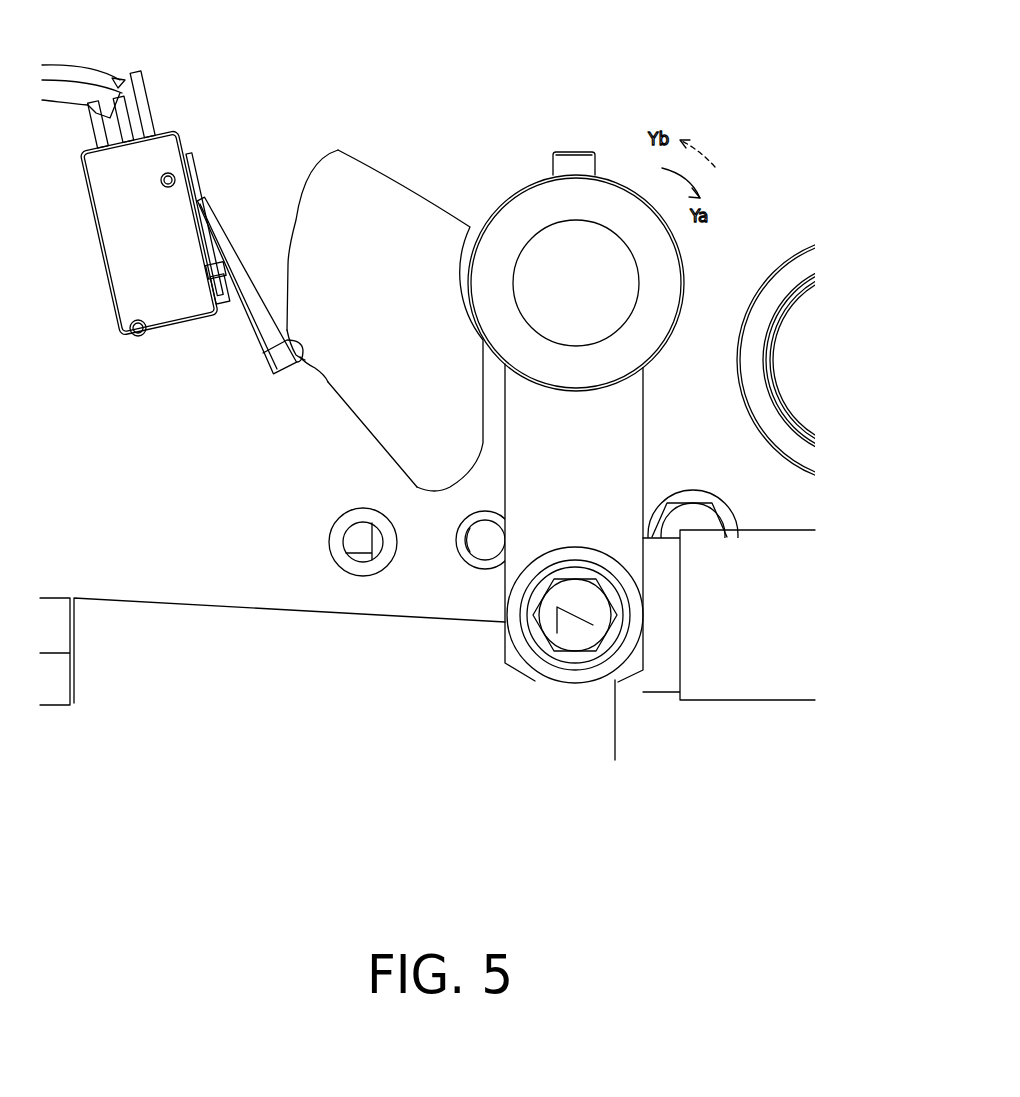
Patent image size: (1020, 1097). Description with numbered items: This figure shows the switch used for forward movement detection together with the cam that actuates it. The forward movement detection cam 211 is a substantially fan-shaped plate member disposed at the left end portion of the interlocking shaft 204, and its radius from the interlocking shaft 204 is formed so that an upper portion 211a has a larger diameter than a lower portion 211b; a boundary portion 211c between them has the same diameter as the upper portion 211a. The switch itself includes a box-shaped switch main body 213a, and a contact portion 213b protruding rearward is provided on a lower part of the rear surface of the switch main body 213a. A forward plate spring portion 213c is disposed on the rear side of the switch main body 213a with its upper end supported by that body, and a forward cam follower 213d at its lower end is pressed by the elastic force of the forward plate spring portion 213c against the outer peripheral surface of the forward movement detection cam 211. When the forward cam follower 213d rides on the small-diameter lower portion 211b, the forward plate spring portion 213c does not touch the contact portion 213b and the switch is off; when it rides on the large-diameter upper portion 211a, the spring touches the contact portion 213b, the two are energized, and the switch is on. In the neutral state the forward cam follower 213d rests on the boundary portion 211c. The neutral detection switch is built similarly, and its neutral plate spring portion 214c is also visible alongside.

The interlocking shaft 204 is at (667, 280).
The forward movement detection cam 211 is at (352, 318).
The upper portion 211a is at (302, 193).
The lower portion 211b is at (352, 423).
The boundary portion 211c is at (298, 352).
The switch main body 213a is at (127, 280).
The contact portion 213b is at (226, 305).
The forward plate spring portion 213c is at (253, 348).
The forward cam follower 213d is at (290, 360).
The neutral plate spring portion 214c is at (250, 306).